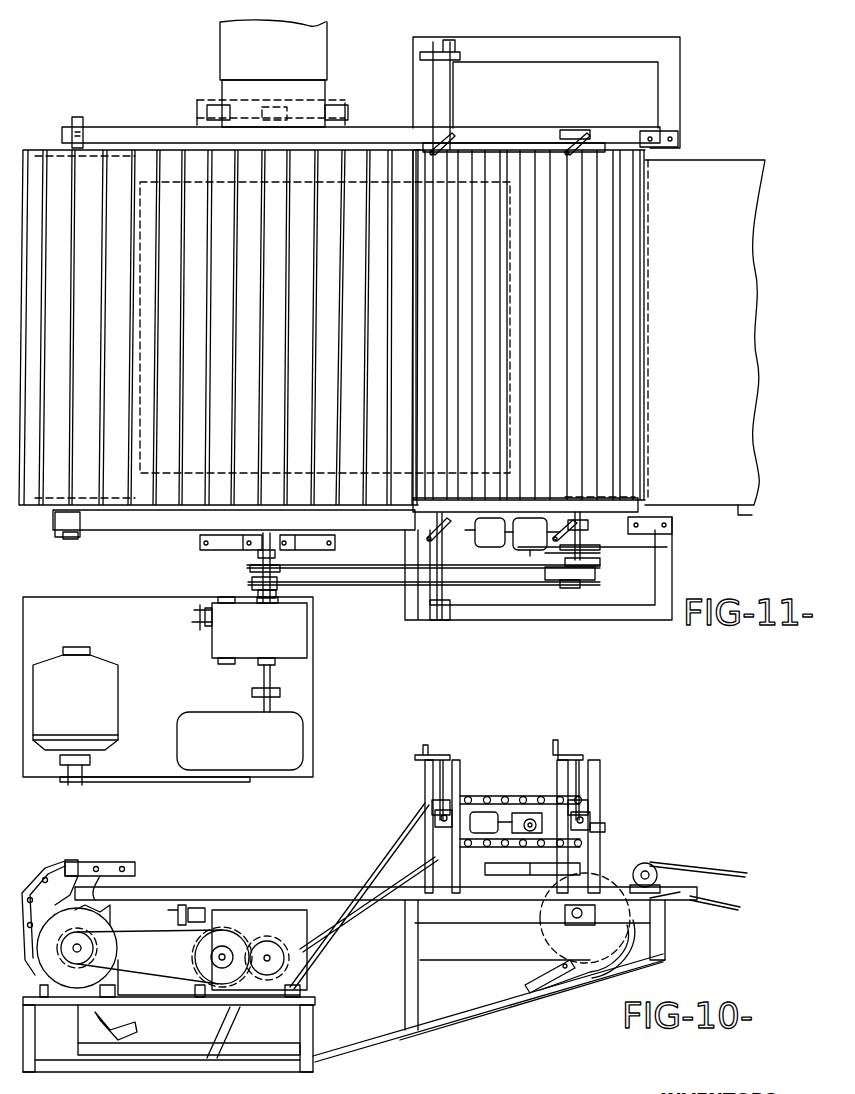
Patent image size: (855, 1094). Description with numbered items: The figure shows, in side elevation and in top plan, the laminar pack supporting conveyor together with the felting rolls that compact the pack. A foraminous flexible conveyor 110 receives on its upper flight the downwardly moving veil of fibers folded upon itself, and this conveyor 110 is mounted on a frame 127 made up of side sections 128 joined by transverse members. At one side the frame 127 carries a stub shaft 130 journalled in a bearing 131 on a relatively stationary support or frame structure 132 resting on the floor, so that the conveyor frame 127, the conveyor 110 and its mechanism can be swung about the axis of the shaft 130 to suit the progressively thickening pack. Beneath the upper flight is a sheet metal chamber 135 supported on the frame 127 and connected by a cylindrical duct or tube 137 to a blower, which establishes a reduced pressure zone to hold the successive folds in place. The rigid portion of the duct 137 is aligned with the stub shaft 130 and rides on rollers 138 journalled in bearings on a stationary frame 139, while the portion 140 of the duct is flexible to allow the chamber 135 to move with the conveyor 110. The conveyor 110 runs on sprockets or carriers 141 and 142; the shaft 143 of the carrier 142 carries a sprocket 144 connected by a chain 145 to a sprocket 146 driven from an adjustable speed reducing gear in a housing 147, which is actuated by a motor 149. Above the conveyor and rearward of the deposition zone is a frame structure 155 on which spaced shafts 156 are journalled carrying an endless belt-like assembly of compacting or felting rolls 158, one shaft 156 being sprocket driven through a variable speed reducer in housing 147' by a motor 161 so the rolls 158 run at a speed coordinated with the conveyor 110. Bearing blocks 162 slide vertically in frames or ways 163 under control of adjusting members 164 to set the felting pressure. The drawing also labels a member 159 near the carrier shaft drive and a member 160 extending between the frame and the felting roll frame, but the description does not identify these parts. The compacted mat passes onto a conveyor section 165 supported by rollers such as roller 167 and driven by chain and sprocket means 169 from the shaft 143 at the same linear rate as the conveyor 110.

In FIG. 11, the flexible conveyor 110 is at (115, 482).
In FIG. 10, the flexible conveyor 110 is at (100, 862).
In FIG. 10, the frame 127 is at (435, 1030).
In FIG. 11, the side sections 128 is at (402, 128).
In FIG. 10, the side sections 128 is at (410, 990).
In FIG. 11, the stub shaft 130 is at (262, 552).
In FIG. 11, the bearing 131 is at (270, 547).
In FIG. 11, the support or frame structure 132 is at (332, 548).
In FIG. 10, the support or frame structure 132 is at (232, 1025).
In FIG. 11, the chamber 135 is at (143, 182).
In FIG. 11, the cylindrical duct or tube 137 is at (210, 94).
In FIG. 11, the rollers 138 is at (207, 110).
In FIG. 11, the stationary frame 139 is at (340, 110).
In FIG. 11, the flexible duct portion 140 is at (320, 40).
In FIG. 11, the sprocket or carrier 141 is at (62, 140).
In FIG. 10, the sprocket or carrier 141 is at (60, 864).
In FIG. 11, the sprocket or carrier 142 is at (640, 495).
In FIG. 11, the shaft 143 is at (575, 582).
In FIG. 10, the shaft 143 is at (560, 912).
In FIG. 11, the sprocket 144 is at (573, 564).
In FIG. 10, the sprocket 144 is at (545, 935).
In FIG. 11, the chain 145 is at (493, 575).
In FIG. 10, the chain 145 is at (340, 968).
In FIG. 11, the sprocket 146 is at (250, 571).
In FIG. 11, the housing 147 is at (191, 689).
In FIG. 10, the housing 147 is at (271, 947).
In FIG. 11, the housing 147' is at (536, 537).
In FIG. 10, the housing 147' is at (532, 810).
In FIG. 11, the motor 149 is at (110, 688).
In FIG. 10, the motor 149 is at (100, 912).
In FIG. 11, the frame structure 155 is at (540, 140).
In FIG. 10, the frame structure 155 is at (606, 830).
In FIG. 11, the shafts 156 is at (412, 514).
In FIG. 10, the shafts 156 is at (440, 817).
In FIG. 11, the compacting or felting rolls 158 is at (600, 462).
In FIG. 10, the compacting or felting rolls 158 is at (498, 803).
In FIG. 11, the support plate 159 is at (556, 565).
In FIG. 10, the tie rod 160 is at (370, 850).
In FIG. 11, the motor 161 is at (489, 532).
In FIG. 10, the motor 161 is at (491, 822).
In FIG. 11, the bearing blocks 162 is at (278, 592).
In FIG. 10, the bearing blocks 162 is at (432, 818).
In FIG. 10, the frames or ways 163 is at (450, 775).
In FIG. 11, the adjusting members 164 is at (455, 135).
In FIG. 10, the adjusting members 164 is at (440, 784).
In FIG. 11, the conveyor section 165 is at (742, 512).
In FIG. 10, the conveyor section 165 is at (735, 873).
In FIG. 10, the roller 167 is at (660, 866).
In FIG. 10, the chain and sprocket means 169 is at (630, 874).